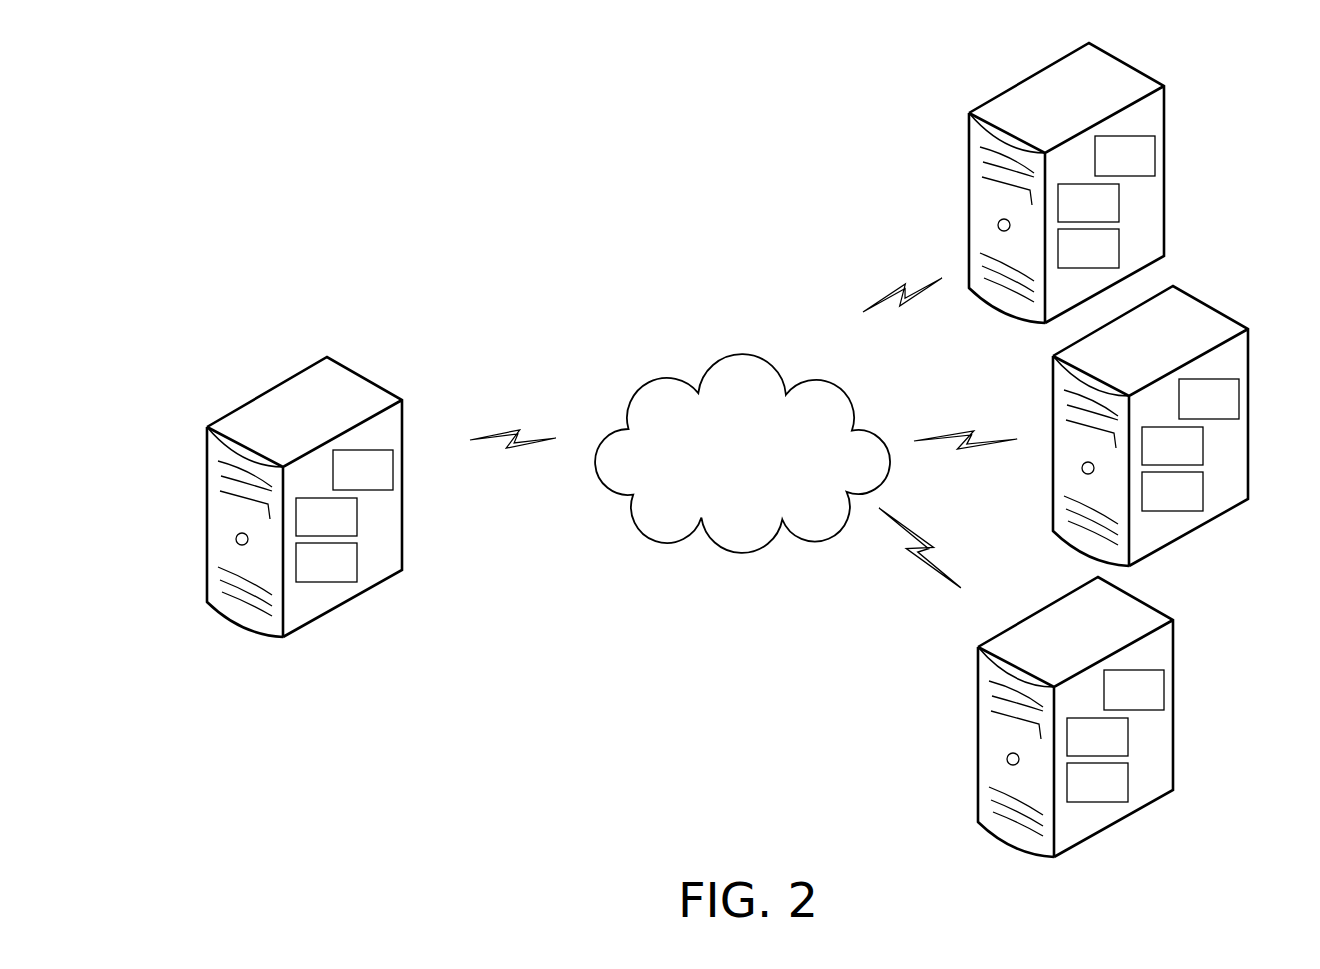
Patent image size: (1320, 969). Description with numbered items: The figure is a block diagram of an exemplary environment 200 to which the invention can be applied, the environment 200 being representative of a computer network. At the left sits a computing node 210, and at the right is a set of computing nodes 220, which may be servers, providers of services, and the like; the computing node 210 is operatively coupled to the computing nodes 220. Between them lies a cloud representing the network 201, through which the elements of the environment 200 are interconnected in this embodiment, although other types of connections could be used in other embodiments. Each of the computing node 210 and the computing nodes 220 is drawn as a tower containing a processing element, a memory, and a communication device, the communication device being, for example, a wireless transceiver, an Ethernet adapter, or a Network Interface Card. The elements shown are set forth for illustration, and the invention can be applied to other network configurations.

The environment 200 is at (237, 63).
The network 201 is at (718, 486).
The computing node 210 is at (340, 326).
The set of computing nodes 220 is at (1197, 63).